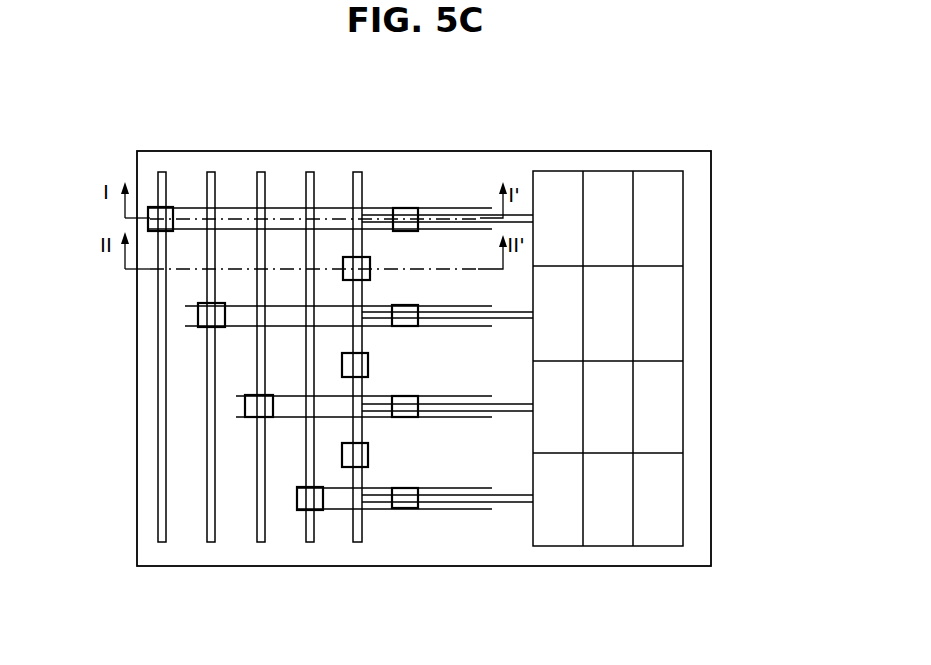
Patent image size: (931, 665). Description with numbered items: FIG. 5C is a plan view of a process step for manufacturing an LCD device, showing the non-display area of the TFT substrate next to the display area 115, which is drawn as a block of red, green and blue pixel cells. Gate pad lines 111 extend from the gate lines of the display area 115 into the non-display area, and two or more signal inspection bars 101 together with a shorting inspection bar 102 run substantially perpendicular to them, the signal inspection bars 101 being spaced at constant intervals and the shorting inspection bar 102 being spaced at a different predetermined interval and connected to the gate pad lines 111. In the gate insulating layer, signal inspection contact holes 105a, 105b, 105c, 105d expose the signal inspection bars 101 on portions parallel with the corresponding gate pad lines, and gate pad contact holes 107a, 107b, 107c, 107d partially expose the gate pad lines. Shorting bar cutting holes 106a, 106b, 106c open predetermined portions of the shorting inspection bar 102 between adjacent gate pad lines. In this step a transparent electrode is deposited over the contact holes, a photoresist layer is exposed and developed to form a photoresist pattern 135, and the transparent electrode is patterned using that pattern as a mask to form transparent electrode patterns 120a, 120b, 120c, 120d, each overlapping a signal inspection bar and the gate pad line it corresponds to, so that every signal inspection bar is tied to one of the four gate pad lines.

The signal inspection bar 101 is at (308, 550).
The shorting inspection bar 102 is at (358, 543).
The signal inspection contact hole 105a is at (181, 207).
The signal inspection contact hole 105b is at (186, 312).
The signal inspection contact hole 105c is at (236, 406).
The signal inspection contact hole 105d is at (297, 499).
The shorting bar cutting hole 106a is at (371, 264).
The shorting bar cutting hole 106b is at (369, 364).
The shorting bar cutting hole 106c is at (369, 455).
The gate pad contact hole 107a is at (402, 208).
The gate pad contact hole 107b is at (402, 318).
The gate pad contact hole 107c is at (405, 400).
The gate pad contact hole 107d is at (405, 490).
The gate pad line 111 is at (445, 498).
The display area 115 is at (565, 171).
The transparent electrode pattern 120a is at (333, 208).
The transparent electrode pattern 120b is at (238, 318).
The transparent electrode pattern 120c is at (290, 413).
The transparent electrode pattern 120d is at (430, 506).
The photoresist pattern 135 is at (697, 543).